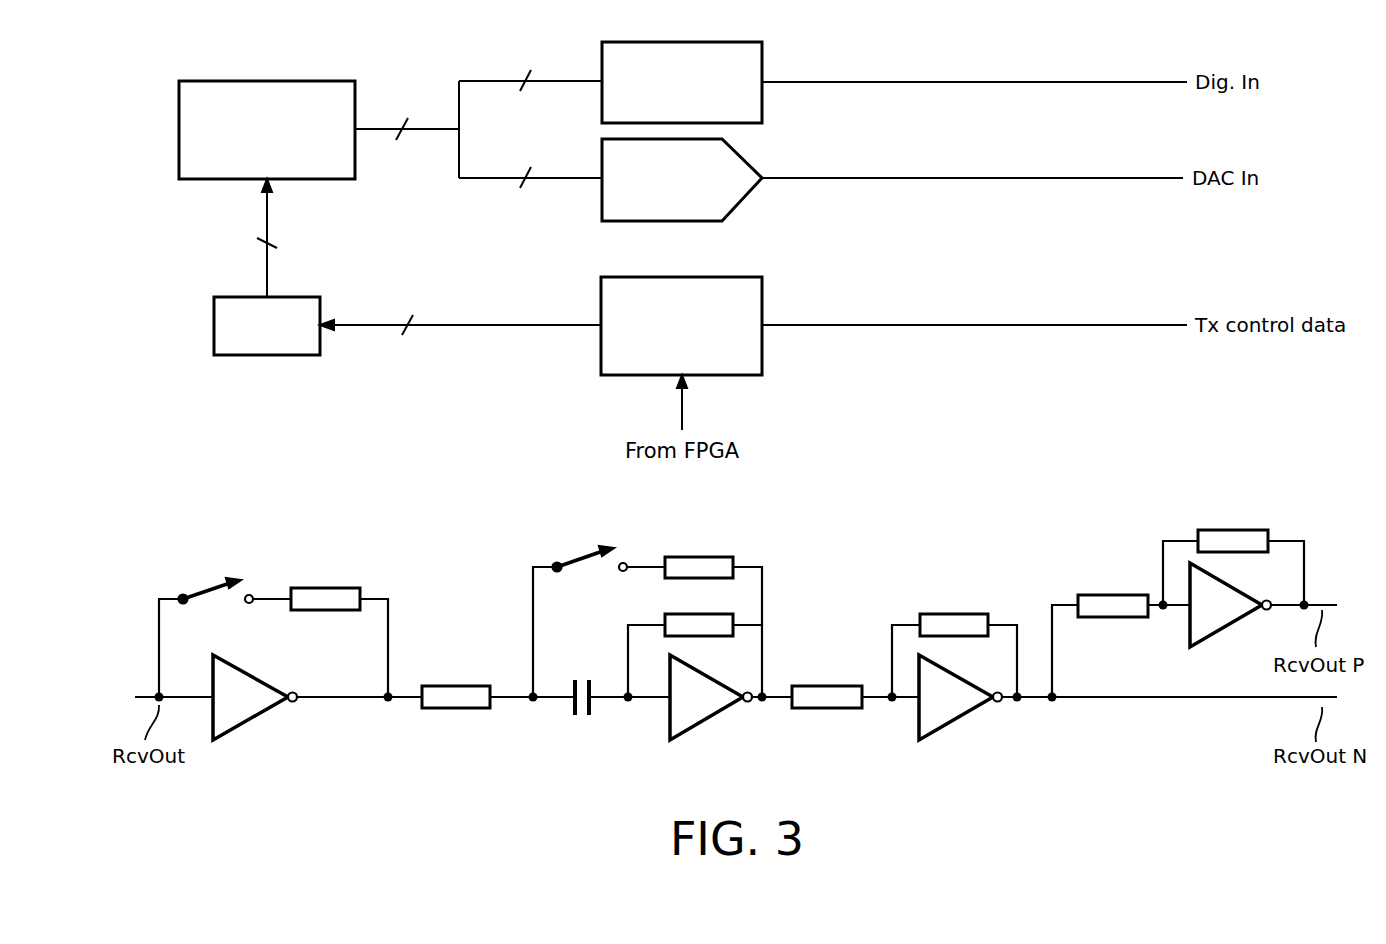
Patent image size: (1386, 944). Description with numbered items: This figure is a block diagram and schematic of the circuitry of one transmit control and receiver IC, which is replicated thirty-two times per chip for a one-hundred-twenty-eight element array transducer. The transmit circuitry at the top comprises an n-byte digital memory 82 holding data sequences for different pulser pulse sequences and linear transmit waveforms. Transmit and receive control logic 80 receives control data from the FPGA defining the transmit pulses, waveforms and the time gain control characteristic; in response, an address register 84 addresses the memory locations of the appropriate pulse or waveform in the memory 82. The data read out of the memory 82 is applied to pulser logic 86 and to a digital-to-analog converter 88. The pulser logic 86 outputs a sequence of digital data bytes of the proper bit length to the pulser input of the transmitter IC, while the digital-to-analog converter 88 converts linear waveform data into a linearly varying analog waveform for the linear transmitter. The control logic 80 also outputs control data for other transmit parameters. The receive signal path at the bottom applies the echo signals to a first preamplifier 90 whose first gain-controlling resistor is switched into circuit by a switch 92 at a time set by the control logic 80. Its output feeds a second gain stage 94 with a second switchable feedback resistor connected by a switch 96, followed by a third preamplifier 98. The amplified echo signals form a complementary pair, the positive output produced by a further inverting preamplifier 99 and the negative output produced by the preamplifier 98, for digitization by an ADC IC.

The transmit and receive control logic 80 is at (601, 361).
The n-byte digital memory 82 is at (179, 126).
The address register 84 is at (214, 324).
The pulser logic 86 is at (602, 108).
The digital-to-analog converter 88 is at (602, 205).
The first preamplifier 90 is at (255, 722).
The switch 92 is at (209, 586).
The second gain stage 94 is at (712, 720).
The switch 96 is at (580, 555).
The third preamplifier 98 is at (958, 720).
The inverting preamplifier 99 is at (1187, 627).